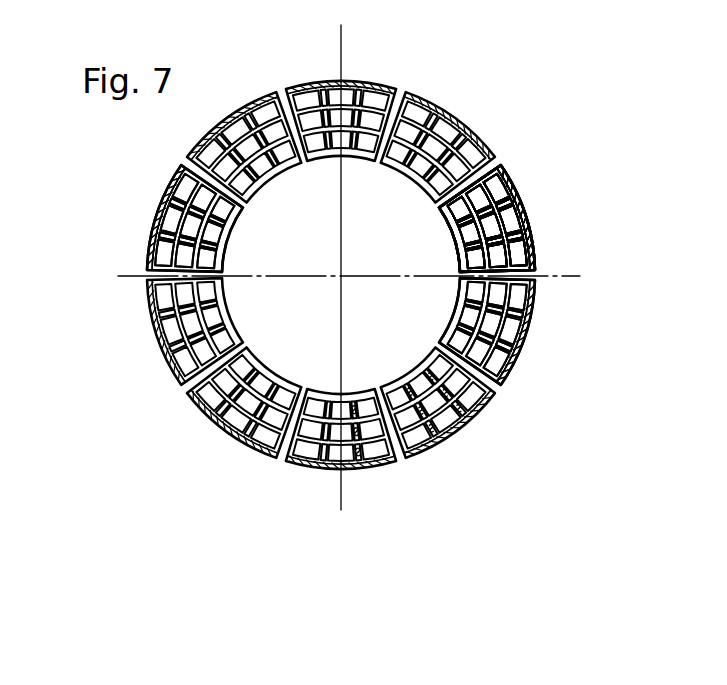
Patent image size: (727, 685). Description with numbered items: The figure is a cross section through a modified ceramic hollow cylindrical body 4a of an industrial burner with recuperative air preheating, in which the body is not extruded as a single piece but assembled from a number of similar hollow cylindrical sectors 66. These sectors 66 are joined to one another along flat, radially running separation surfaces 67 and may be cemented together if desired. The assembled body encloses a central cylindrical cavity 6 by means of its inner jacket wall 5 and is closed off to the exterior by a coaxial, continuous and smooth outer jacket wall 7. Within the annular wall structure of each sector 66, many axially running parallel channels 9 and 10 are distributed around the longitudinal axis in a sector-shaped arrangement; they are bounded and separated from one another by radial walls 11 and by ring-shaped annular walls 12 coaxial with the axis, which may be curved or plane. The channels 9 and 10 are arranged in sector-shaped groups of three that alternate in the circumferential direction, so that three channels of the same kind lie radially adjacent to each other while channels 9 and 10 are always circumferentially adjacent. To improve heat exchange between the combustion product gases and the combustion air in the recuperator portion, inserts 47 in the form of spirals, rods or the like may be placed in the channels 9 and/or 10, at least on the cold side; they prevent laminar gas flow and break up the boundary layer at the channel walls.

The hollow cylindrical body 4a is at (358, 78).
The hollow cylindrical sector 66 is at (443, 108).
The separation surface 67 is at (493, 175).
The channel 9 is at (500, 178).
The channel 10 is at (520, 200).
The radial wall 11 is at (530, 232).
The annular wall 12 is at (462, 235).
The cylindrical cavity 6 is at (375, 266).
The inner jacket wall 5 is at (460, 328).
The outer jacket wall 7 is at (522, 340).
The inserts 47 is at (410, 452).